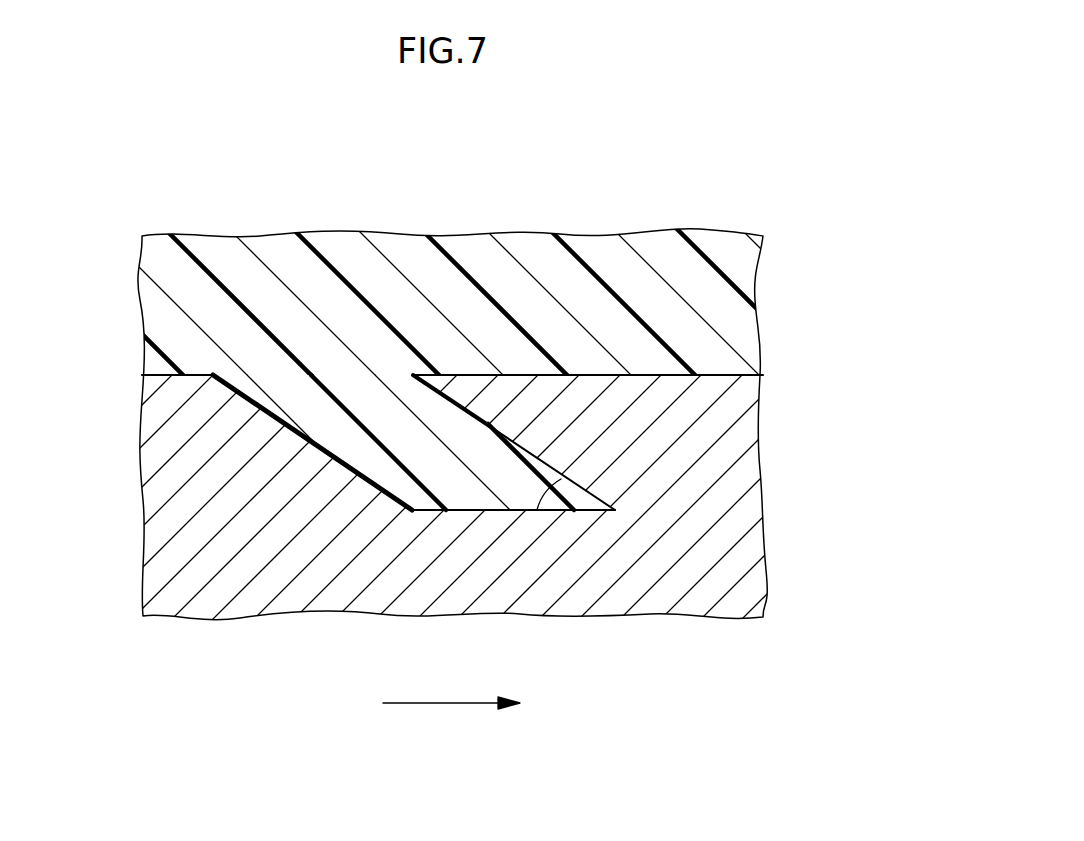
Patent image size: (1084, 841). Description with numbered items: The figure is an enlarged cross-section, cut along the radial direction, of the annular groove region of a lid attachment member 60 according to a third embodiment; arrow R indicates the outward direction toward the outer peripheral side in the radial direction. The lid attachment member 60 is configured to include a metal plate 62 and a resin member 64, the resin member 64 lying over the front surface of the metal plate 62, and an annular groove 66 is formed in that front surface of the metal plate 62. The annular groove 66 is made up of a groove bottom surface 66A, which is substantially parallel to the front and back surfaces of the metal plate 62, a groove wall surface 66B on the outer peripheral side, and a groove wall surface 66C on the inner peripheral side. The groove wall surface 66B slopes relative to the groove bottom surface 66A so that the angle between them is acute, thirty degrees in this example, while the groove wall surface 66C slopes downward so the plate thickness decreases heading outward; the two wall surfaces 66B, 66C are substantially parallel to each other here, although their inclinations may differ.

The lid attachment member 60 is at (750, 187).
The metal plate 62 is at (758, 500).
The resin member 64 is at (765, 318).
The annular groove 66 is at (393, 311).
The groove bottom surface 66A is at (446, 508).
The groove wall surface 66B is at (486, 424).
The groove wall surface 66C is at (305, 435).
The arrow R is at (443, 705).